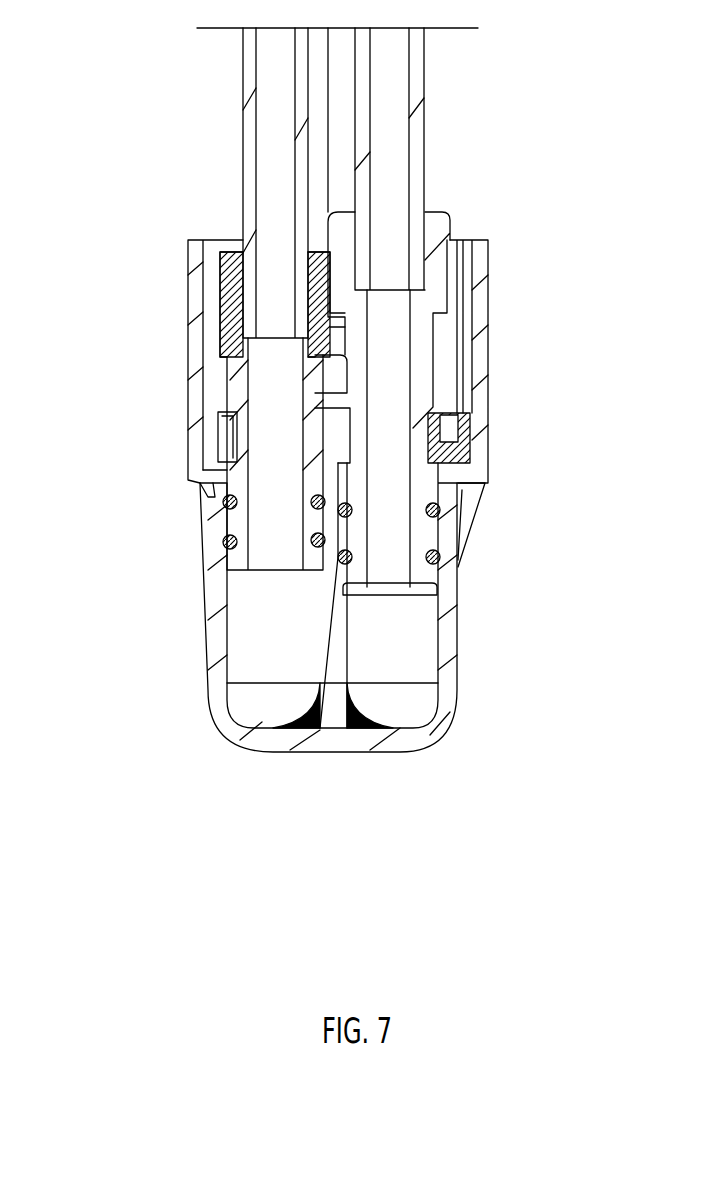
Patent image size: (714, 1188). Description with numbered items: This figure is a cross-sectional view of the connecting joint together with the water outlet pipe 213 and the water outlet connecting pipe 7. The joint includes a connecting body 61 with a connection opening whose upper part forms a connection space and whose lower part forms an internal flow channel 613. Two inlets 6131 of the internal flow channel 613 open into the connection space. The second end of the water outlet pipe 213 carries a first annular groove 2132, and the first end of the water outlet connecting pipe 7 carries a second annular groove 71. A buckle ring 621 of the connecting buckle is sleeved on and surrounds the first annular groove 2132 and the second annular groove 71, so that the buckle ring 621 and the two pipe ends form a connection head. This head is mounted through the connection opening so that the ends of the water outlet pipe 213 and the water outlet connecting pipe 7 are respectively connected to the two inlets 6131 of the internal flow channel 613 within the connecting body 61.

The water outlet connecting pipe 7 is at (245, 323).
The buckle ring 621 is at (230, 432).
The second annular groove 71 is at (237, 450).
The inlets 6131 is at (215, 495).
The connecting body 61 is at (217, 613).
The internal flow channel 613 is at (283, 660).
The water outlet pipe 213 is at (413, 347).
The first annular groove 2132 is at (470, 442).